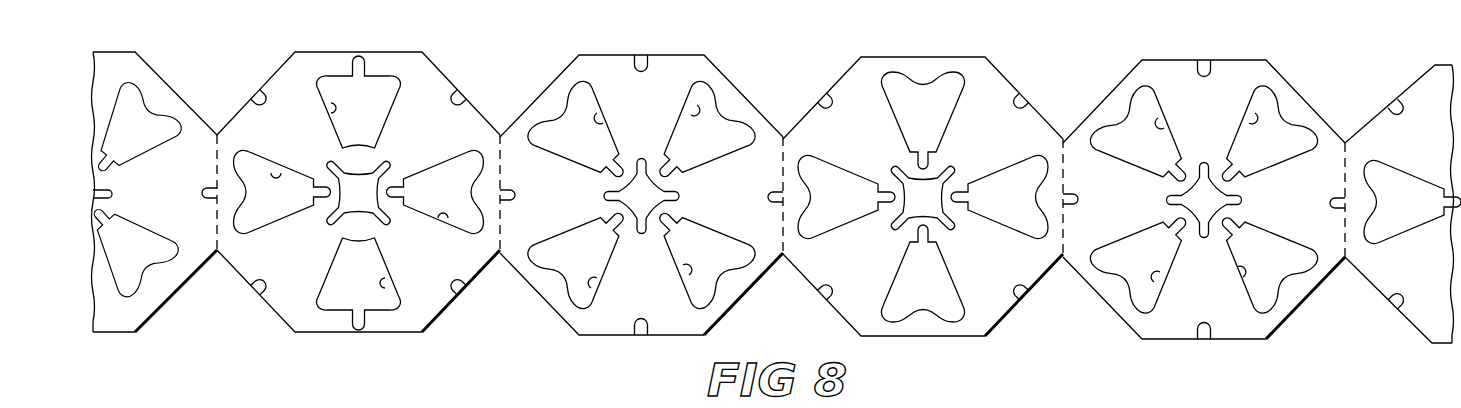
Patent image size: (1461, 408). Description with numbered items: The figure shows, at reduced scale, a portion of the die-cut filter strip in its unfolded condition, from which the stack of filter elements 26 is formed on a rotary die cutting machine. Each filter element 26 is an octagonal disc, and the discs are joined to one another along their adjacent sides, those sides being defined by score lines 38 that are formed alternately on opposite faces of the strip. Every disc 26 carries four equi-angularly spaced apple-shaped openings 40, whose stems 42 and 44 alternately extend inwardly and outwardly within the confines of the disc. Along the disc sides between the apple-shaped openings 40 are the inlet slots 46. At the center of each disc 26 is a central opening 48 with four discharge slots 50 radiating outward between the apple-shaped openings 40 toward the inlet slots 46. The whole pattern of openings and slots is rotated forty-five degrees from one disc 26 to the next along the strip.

The filter element 26 is at (277, 317).
The score line 38 is at (217, 237).
The apple-shaped opening 40 is at (331, 112).
The stem 42 is at (321, 201).
The stem 44 is at (1297, 114).
The inlet slot 46 is at (266, 98).
The central opening 48 is at (379, 188).
The discharge slot 50 is at (374, 168).